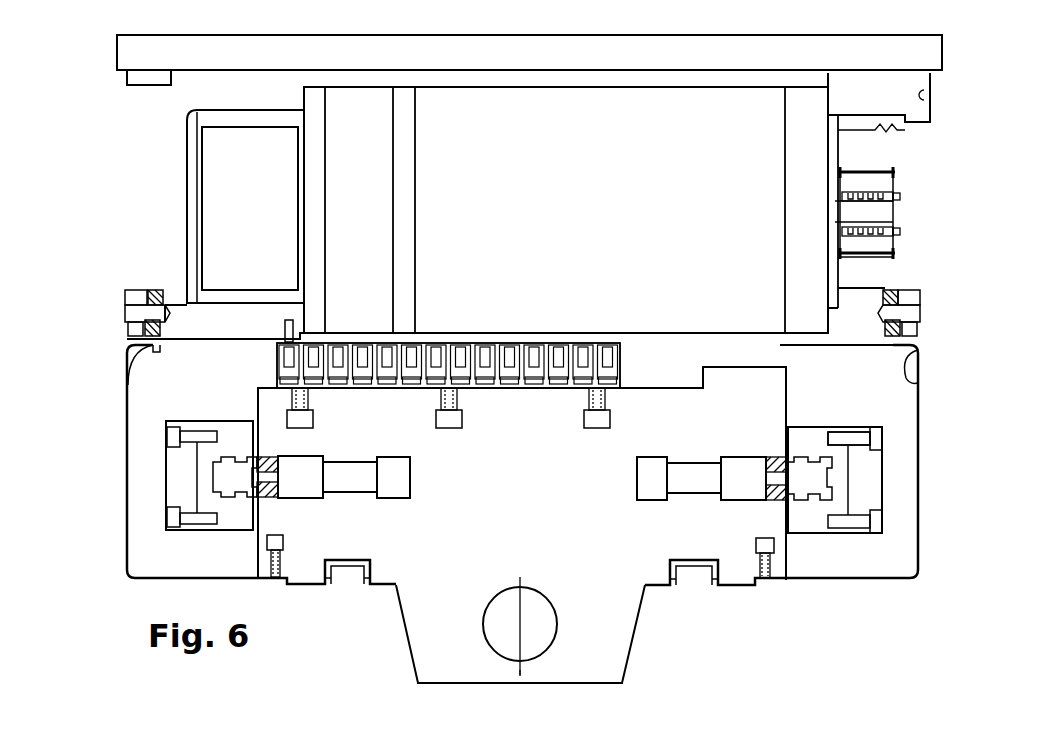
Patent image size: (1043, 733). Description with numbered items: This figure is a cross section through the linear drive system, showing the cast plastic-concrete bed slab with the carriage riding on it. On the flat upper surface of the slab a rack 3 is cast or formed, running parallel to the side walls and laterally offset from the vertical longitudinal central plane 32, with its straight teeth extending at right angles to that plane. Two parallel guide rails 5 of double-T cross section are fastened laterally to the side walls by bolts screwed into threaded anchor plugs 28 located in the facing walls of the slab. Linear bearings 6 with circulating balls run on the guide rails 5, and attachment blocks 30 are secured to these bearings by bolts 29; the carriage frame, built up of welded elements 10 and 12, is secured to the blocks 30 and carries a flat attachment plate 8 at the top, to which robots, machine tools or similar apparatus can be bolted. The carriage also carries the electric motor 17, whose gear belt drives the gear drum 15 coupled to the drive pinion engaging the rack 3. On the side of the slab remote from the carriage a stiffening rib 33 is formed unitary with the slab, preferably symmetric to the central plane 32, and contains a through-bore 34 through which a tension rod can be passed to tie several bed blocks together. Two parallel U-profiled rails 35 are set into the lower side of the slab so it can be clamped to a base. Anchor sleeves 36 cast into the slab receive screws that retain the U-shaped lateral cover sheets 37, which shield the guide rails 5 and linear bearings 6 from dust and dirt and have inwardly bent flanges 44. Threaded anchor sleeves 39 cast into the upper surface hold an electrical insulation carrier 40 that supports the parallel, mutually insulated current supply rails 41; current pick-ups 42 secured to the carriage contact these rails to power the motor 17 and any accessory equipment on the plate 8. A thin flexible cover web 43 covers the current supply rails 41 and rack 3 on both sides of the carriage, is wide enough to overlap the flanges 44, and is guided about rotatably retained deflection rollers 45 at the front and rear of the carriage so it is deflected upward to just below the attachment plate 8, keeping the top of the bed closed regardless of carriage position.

The rack 3 is at (787, 377).
The guide rails 5 is at (235, 460).
The linear bearings 6 is at (817, 525).
The attachment plate 8 is at (928, 58).
The welded element 10 is at (926, 103).
The welded element 12 is at (130, 297).
The gear drum 15 is at (880, 183).
The electric motor 17 is at (208, 157).
The threaded anchor plugs 28 is at (355, 468).
The bolts 29 is at (880, 440).
The attachment blocks 30 is at (180, 478).
The longitudinal central plane 32 is at (522, 672).
The stiffening rib 33 is at (427, 645).
The through-bore 34 is at (497, 633).
The U-profiled rails 35 is at (347, 586).
The anchor sleeves 36 is at (283, 562).
The lateral cover sheets 37 is at (140, 556).
The anchor sleeves 39 is at (452, 428).
The electrical insulation carrier 40 is at (625, 373).
The current supply rails 41 is at (280, 352).
The current pick-ups 42 is at (285, 329).
The cover web 43 is at (188, 343).
The inwardly bent flanges 44 is at (128, 385).
The deflection rollers 45 is at (177, 305).